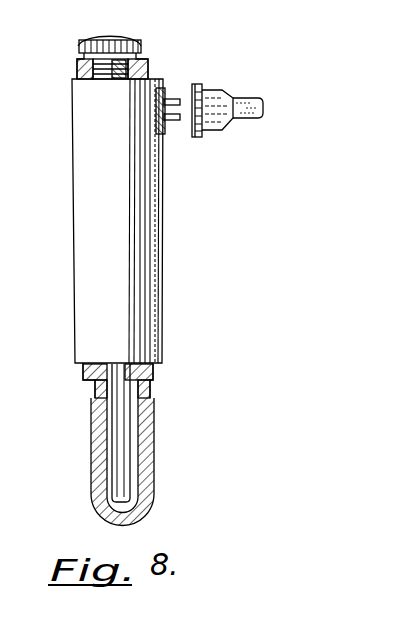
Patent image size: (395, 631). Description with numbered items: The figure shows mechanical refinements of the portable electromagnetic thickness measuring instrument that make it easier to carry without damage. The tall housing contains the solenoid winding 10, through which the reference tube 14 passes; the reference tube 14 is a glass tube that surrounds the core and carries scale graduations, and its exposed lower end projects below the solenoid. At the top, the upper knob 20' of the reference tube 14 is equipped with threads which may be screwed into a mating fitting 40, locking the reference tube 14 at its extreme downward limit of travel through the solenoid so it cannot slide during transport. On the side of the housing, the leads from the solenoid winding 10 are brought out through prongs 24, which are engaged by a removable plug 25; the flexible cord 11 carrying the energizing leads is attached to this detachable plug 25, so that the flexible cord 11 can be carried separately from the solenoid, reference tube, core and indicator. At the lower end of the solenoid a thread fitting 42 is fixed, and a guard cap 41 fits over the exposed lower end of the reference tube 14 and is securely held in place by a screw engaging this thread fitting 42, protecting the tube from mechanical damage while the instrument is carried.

The upper knob 20' is at (139, 52).
The mating fitting 40 is at (75, 70).
The solenoid winding 10 is at (74, 222).
The prongs 24 is at (167, 94).
The flexible cord 11 is at (242, 95).
The removable plug 25 is at (218, 123).
The thread fitting 42 is at (156, 372).
The guard cap 41 is at (90, 452).
The reference tube 14 is at (131, 452).